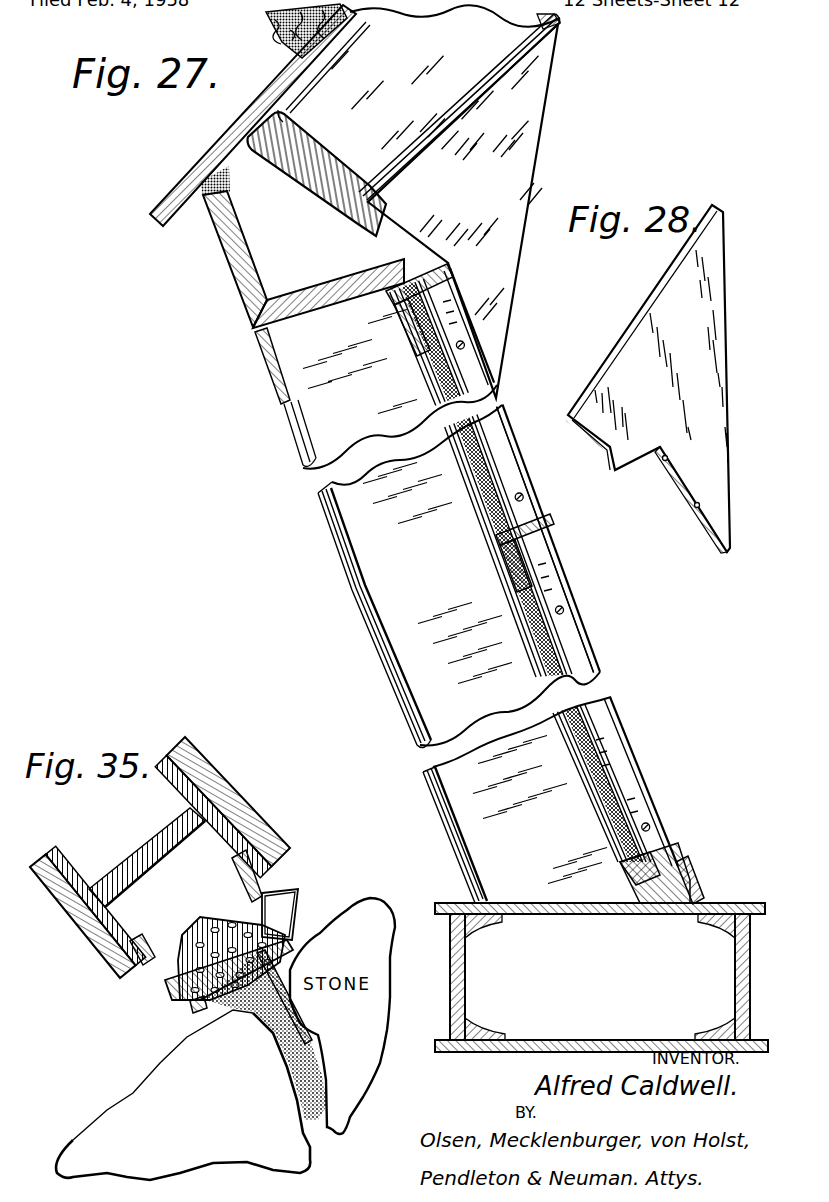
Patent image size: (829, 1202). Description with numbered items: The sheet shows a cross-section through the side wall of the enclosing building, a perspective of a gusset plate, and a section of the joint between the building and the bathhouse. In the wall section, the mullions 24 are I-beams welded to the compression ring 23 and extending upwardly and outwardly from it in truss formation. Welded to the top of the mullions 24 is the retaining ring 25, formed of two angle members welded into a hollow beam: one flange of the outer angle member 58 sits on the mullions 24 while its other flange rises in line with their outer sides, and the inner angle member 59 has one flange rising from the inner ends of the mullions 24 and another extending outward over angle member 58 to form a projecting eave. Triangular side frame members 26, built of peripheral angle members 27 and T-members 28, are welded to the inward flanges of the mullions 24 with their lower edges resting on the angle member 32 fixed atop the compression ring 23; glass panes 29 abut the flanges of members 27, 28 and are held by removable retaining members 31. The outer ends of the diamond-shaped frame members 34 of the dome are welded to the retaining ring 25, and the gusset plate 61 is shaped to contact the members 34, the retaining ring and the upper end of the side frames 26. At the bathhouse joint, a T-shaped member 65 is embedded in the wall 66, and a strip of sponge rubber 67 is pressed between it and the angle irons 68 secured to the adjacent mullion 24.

In FIG. 27, the compression ring 23 is at (733, 957).
In FIG. 27, the mullions 24 is at (387, 633).
In FIG. 35, the mullions 24 is at (220, 783).
In FIG. 27, the retaining ring 25 is at (223, 275).
In FIG. 27, the side frame members 26 is at (532, 445).
In FIG. 27, the peripheral angle members 27 is at (678, 872).
In FIG. 27, the T-members 28 is at (550, 549).
In FIG. 27, the glass panes 29 is at (557, 657).
In FIG. 27, the retaining members 31 is at (660, 872).
In FIG. 27, the angle member 32 is at (695, 887).
In FIG. 27, the diamond-shaped frame members 34 is at (485, 62).
In FIG. 27, the angle member 58 is at (212, 234).
In FIG. 27, the inner angle member 59 is at (324, 200).
In FIG. 27, the gusset plate 61 is at (527, 127).
In FIG. 28, the gusset plate 61 is at (703, 348).
In FIG. 35, the T-shaped member 65 is at (197, 1010).
In FIG. 35, the wall 66 is at (187, 1073).
In FIG. 35, the strip of sponge rubber 67 is at (170, 977).
In FIG. 35, the angle irons 68 is at (180, 943).